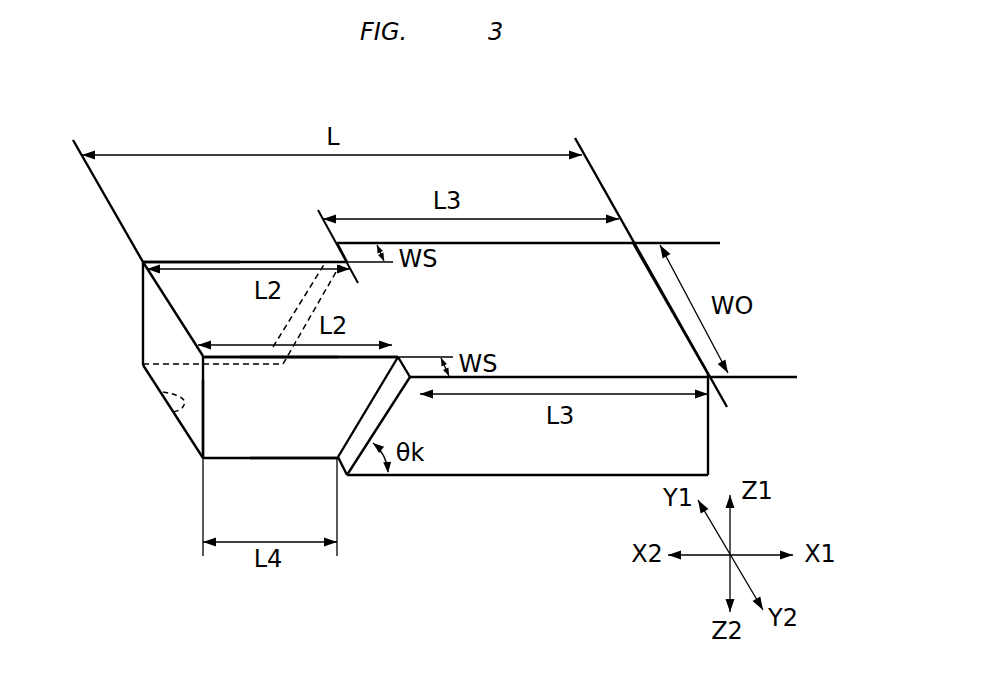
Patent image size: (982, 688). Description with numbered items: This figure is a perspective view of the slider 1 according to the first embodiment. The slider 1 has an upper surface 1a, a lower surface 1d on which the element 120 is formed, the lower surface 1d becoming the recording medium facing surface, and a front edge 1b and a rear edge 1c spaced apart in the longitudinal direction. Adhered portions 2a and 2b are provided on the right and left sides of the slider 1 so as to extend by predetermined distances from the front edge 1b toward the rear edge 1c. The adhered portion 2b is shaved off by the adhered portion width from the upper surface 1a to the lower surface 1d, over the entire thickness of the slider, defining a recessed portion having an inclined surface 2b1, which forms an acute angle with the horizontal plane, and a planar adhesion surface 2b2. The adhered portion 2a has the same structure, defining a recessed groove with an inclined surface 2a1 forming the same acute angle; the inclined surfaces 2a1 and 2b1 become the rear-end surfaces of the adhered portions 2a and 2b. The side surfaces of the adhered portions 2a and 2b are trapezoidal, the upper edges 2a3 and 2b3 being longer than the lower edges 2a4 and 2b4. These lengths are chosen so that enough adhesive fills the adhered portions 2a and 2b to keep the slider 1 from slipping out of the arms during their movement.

The slider 1 is at (158, 133).
The upper surface 1a is at (168, 283).
The front edge 1b is at (158, 318).
The rear edge 1c is at (690, 342).
The lower surface 1d is at (193, 442).
The adhered portion 2a is at (204, 242).
The inclined surface 2a1 is at (333, 252).
The upper edge 2a3 is at (237, 258).
The lower edge 2a4 is at (168, 392).
The adhered portion 2b is at (247, 408).
The inclined surface 2b1 is at (350, 458).
The planar adhesion surface 2b2 is at (240, 442).
The upper edge 2b3 is at (289, 354).
The lower edge 2b4 is at (295, 460).
The element 120 is at (163, 403).